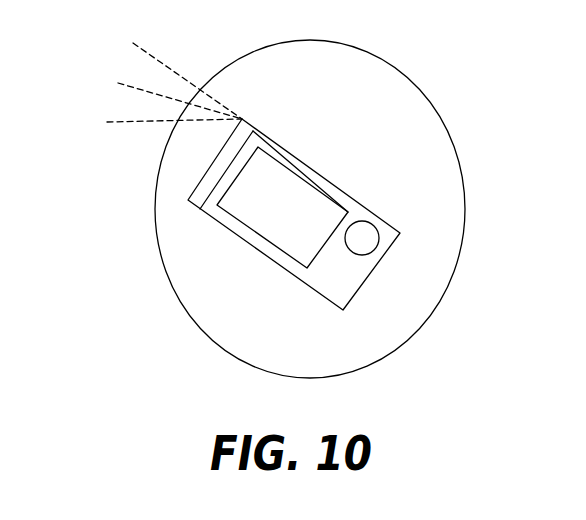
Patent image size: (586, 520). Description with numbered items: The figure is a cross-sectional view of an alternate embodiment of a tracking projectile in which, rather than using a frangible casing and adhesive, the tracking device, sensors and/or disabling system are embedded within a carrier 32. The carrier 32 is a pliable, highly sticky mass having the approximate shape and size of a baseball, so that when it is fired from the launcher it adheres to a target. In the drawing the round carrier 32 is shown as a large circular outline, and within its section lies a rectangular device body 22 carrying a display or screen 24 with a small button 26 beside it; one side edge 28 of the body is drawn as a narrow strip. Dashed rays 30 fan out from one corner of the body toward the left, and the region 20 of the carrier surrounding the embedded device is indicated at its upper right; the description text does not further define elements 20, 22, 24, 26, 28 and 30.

The display screen / field of view 20 is at (435, 105).
The mobile device body 22 is at (335, 290).
The display of mobile device 24 is at (305, 238).
The button 26 is at (368, 240).
The side edge of mobile device 28 is at (200, 195).
The camera field of view rays 30 is at (130, 84).
The carrier 32 is at (367, 83).